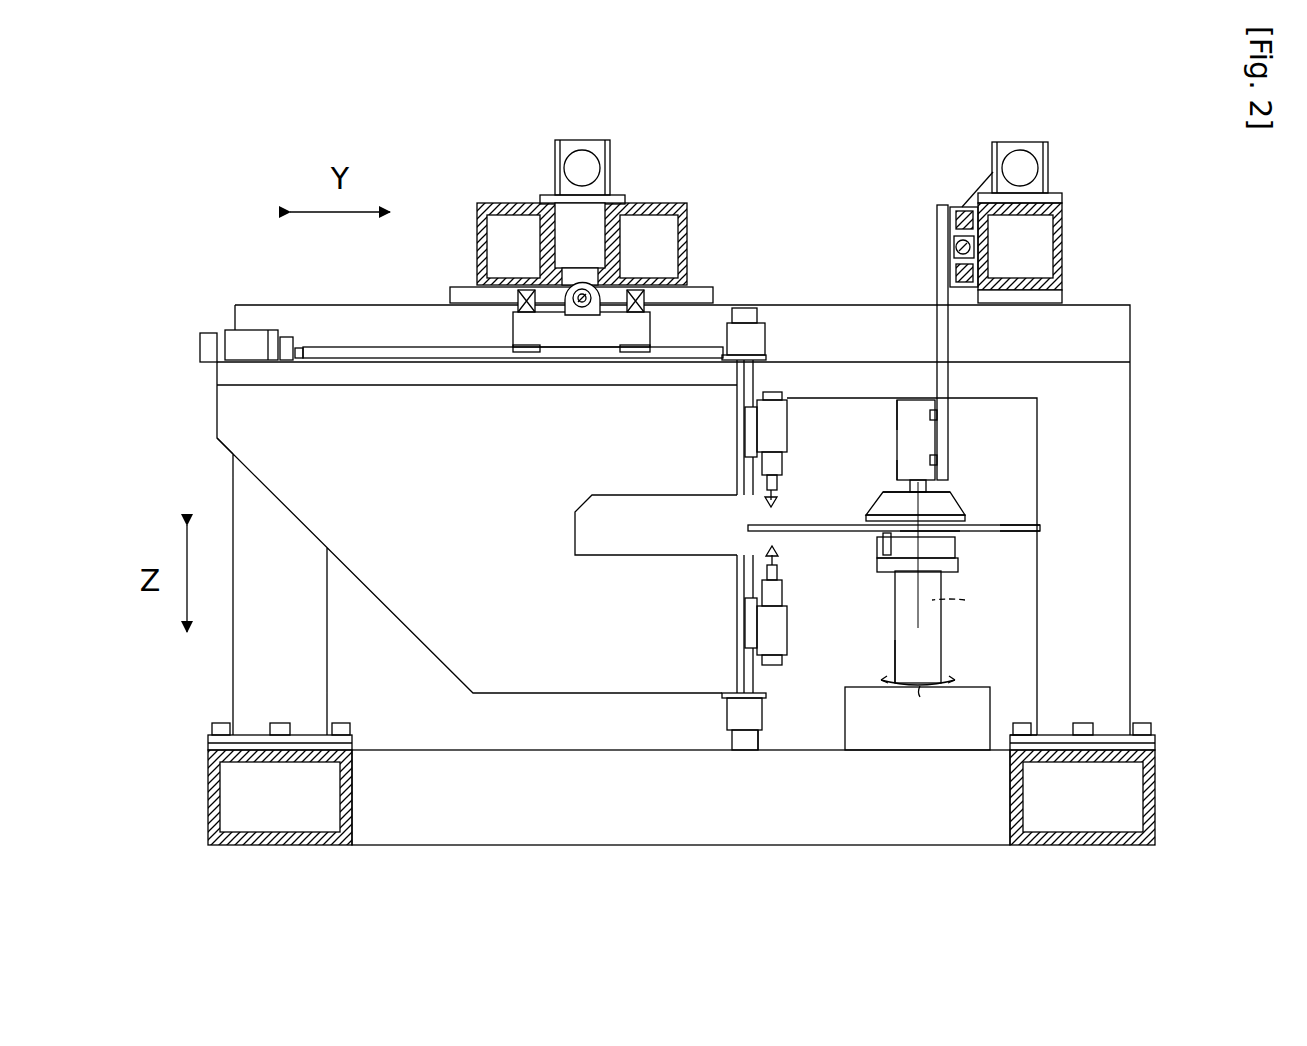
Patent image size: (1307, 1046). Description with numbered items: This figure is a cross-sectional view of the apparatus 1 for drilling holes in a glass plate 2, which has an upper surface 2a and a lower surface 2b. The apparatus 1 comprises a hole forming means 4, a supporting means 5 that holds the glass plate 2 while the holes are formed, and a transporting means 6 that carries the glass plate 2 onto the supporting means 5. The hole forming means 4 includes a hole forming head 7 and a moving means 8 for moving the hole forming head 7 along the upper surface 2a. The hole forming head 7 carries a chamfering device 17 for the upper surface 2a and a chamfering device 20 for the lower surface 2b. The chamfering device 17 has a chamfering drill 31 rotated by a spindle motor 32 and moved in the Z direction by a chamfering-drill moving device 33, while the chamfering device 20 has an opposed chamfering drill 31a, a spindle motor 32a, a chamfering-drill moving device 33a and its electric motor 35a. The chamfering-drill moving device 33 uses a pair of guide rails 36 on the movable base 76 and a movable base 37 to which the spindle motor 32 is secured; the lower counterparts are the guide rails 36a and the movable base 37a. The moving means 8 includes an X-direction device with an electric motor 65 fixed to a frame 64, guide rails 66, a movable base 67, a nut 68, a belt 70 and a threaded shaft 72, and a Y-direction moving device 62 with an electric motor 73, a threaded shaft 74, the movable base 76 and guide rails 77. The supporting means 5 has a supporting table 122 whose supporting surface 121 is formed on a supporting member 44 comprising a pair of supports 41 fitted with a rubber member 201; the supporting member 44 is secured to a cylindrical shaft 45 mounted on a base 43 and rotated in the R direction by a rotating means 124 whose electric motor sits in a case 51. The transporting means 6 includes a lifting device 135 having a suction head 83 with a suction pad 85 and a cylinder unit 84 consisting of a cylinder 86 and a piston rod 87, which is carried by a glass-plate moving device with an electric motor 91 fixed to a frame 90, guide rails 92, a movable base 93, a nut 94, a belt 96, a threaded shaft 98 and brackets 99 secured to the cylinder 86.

The apparatus for drilling holes in a glass plate 1 is at (215, 300).
The glass plate 2 is at (935, 525).
The upper surface 2a is at (1055, 524).
The lower surface 2b is at (1055, 532).
The hole forming means 4 is at (563, 255).
The supporting means 5 is at (958, 652).
The transporting means 6 is at (974, 300).
The hole forming head 7 is at (764, 520).
The moving means 8 is at (613, 177).
The chamfering device 17 is at (745, 305).
The chamfering device 20 is at (740, 752).
The chamfering drill 31 is at (765, 505).
The chamfering drill 31a is at (768, 548).
The spindle motor 32 is at (782, 425).
The spindle motor 32a is at (784, 628).
The chamfering-drill moving device 33 is at (767, 322).
The chamfering-drill moving device 33a is at (758, 750).
The electric motor 35a is at (765, 340).
The guide rails 36 is at (740, 395).
The guide rails 36a is at (748, 655).
The movable base 37 is at (748, 432).
The movable base 37a is at (750, 622).
The supports 41 is at (883, 557).
The base 43 is at (427, 830).
The supporting member 44 is at (960, 560).
The cylindrical shaft 45 is at (943, 635).
The case 51 is at (965, 745).
The Y-direction moving device 62 is at (193, 330).
The frame 64 is at (550, 244).
The electric motor 65 is at (583, 140).
The guide rails 66 is at (520, 308).
The movable base 67 is at (530, 330).
The nut 68 is at (580, 312).
The belt 70 is at (558, 245).
The threaded shaft 72 is at (590, 312).
The electric motor 73 is at (200, 347).
The threaded shaft 74 is at (298, 350).
The movable base 76 is at (225, 420).
The guide rails 77 is at (340, 350).
The suction head 83 is at (962, 490).
The cylinder unit 84 is at (897, 452).
The suction pad 85 is at (965, 515).
The cylinder 86 is at (905, 470).
The piston rod 87 is at (908, 486).
The frame 90 is at (1063, 240).
The electric motor 91 is at (1020, 148).
The guide rails 92 is at (963, 212).
The movable base 93 is at (950, 218).
The nut 94 is at (962, 272).
The belt 96 is at (982, 185).
The threaded shaft 98 is at (958, 247).
The brackets 99 is at (950, 345).
The supporting surface 121 is at (930, 530).
The supporting table 122 is at (893, 640).
The rotating means 124 is at (992, 688).
The lifting device 135 is at (895, 432).
The rubber member 201 is at (885, 540).